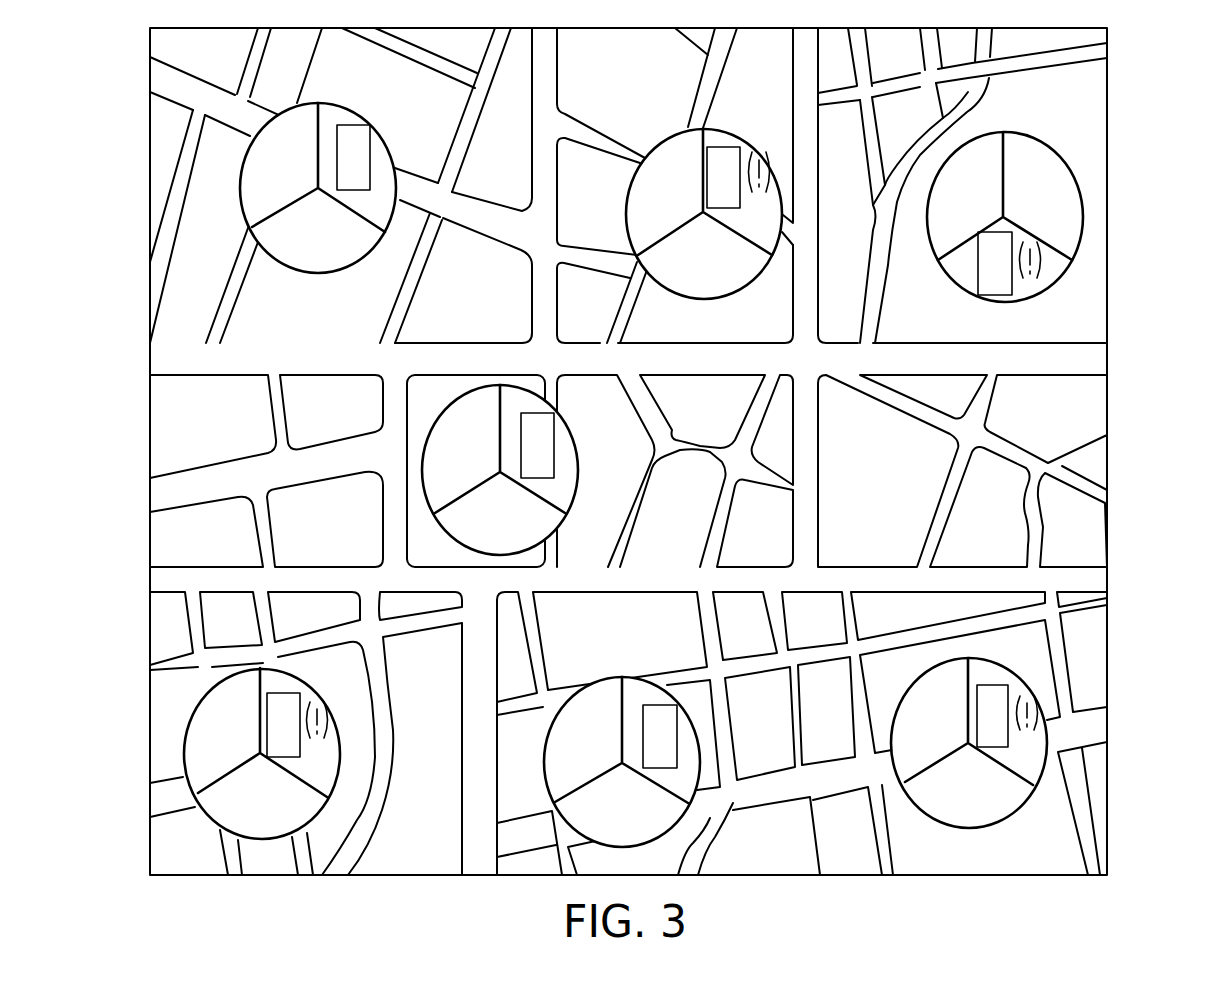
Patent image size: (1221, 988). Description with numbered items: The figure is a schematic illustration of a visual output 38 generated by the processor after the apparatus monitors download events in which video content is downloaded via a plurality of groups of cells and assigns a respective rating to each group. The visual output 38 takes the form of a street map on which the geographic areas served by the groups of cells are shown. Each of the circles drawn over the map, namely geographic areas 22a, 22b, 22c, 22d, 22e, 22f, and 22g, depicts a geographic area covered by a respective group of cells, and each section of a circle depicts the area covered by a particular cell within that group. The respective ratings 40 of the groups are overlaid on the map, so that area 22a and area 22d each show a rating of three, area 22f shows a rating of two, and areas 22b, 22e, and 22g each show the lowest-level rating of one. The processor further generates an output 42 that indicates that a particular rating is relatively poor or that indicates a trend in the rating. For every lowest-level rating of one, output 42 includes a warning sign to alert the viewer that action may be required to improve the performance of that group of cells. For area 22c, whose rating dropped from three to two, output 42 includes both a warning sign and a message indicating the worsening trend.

The geographic area 22a is at (304, 174).
The geographic area 22b is at (689, 200).
The geographic area 22c is at (989, 202).
The geographic area 22d is at (487, 462).
The geographic area 22e is at (245, 741).
The geographic area 22f is at (603, 748).
The geographic area 22g is at (956, 728).
The visual output 38 is at (1107, 112).
The rating 40 is at (371, 156).
The output 42 is at (782, 197).